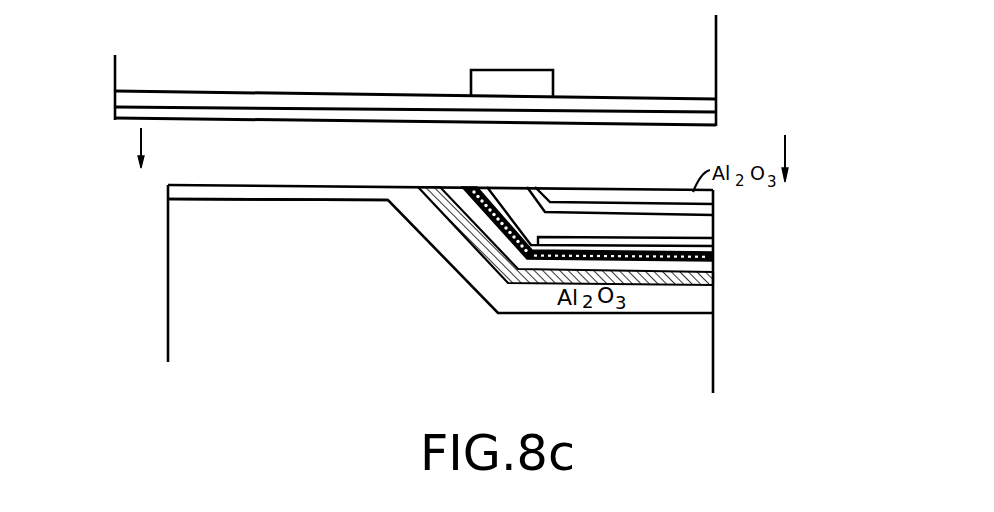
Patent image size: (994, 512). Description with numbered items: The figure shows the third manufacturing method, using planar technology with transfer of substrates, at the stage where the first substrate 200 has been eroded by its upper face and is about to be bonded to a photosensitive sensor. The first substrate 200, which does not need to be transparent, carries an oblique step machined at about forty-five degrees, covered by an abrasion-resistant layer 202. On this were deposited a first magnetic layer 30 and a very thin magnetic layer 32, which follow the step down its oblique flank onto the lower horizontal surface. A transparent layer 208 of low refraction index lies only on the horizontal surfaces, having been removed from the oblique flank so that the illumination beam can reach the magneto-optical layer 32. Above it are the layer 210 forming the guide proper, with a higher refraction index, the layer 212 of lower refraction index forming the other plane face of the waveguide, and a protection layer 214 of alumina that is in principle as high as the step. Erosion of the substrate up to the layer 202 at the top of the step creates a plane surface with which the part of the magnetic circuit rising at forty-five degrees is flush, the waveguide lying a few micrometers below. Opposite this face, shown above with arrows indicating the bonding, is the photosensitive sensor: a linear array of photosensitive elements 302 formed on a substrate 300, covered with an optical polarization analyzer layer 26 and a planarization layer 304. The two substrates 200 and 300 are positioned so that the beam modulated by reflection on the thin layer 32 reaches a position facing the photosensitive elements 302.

The substrate 300 is at (707, 66).
The photosensitive elements 302 is at (540, 83).
The optical polarization analyzer layer 26 is at (118, 100).
The planarization layer 304 is at (118, 113).
The first substrate 200 is at (180, 266).
The abrasion-resistant layer 202 is at (168, 190).
The protection layer 214 is at (666, 190).
The layer with lower refraction index 212 is at (712, 209).
The guide layer 210 is at (702, 229).
The transparent layer 208 is at (713, 242).
The very thin magnetic layer 32 is at (713, 258).
The first magnetic layer 30 is at (715, 275).